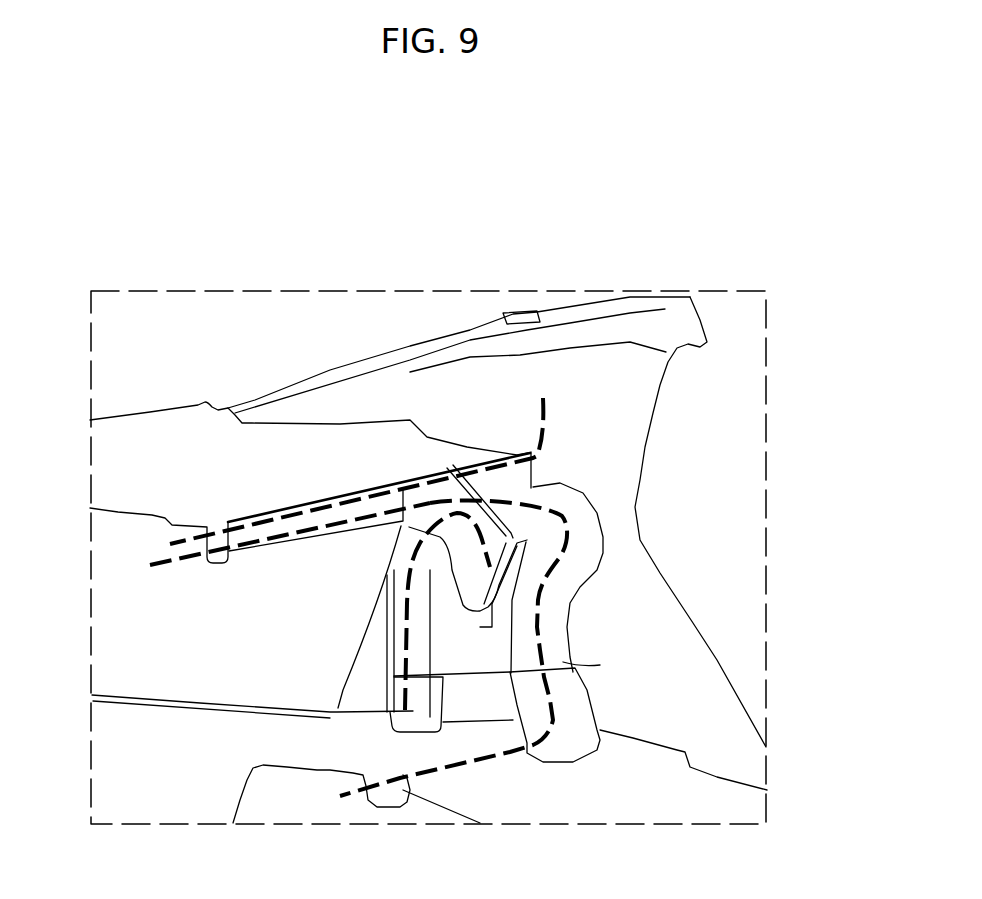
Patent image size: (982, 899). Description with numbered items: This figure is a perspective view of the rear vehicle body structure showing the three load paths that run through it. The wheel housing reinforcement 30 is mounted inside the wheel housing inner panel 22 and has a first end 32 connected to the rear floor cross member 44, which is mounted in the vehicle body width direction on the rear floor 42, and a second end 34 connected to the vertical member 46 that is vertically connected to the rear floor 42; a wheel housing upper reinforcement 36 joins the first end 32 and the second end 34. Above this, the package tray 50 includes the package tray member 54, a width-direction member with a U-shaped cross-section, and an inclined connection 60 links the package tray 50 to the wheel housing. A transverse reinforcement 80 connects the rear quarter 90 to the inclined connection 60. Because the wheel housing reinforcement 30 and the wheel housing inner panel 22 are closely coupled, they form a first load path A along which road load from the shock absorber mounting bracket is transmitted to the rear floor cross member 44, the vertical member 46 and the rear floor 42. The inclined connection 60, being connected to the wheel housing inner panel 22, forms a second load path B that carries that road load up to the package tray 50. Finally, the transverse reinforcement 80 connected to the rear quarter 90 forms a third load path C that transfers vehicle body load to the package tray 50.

The wheel housing inner panel 22 is at (627, 617).
The wheel housing reinforcement 30 is at (588, 589).
The first end 32 is at (600, 665).
The second end 34 is at (405, 663).
The wheel housing upper reinforcement 36 is at (573, 527).
The rear floor 42 is at (533, 808).
The rear floor cross member 44 is at (563, 745).
The vertical member 46 is at (427, 713).
The package tray 50 is at (215, 403).
The package tray member 54 is at (233, 563).
The inclined connection 60 is at (403, 537).
The transverse reinforcement 80 is at (528, 488).
The rear quarter 90 is at (655, 432).
The first load path A is at (340, 796).
The second load path B is at (152, 566).
The third load path C is at (543, 398).